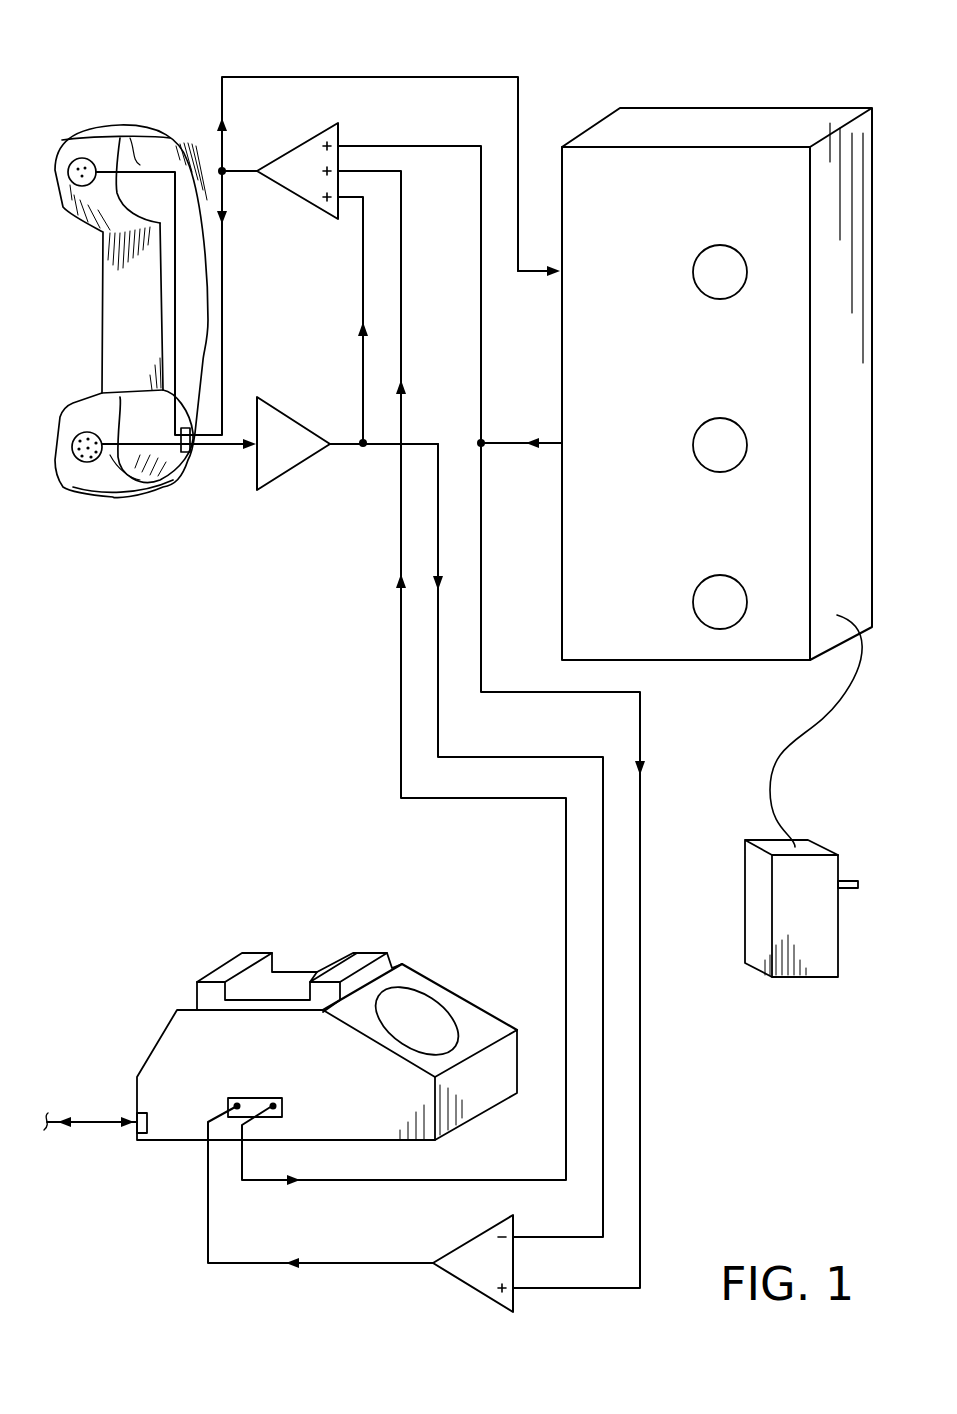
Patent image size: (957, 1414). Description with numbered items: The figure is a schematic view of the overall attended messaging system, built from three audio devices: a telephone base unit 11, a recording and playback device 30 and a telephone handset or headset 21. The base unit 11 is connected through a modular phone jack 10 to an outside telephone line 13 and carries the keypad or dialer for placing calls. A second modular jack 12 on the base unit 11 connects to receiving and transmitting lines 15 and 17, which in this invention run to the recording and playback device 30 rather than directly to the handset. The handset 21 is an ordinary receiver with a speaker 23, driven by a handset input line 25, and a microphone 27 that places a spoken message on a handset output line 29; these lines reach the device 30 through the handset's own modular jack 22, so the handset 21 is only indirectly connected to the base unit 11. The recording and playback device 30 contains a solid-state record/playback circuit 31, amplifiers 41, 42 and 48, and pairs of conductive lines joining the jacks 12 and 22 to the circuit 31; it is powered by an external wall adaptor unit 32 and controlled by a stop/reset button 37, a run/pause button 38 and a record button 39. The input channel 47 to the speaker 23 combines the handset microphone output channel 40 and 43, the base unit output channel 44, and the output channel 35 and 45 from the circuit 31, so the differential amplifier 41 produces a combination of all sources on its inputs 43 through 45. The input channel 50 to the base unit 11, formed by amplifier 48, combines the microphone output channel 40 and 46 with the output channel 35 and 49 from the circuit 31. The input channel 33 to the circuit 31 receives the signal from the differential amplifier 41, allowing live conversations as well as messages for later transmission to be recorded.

The modular phone jack 10 is at (142, 1133).
The telephone base unit 11 is at (150, 1052).
The modular jack 12 is at (250, 1098).
The outside telephone line 13 is at (90, 1124).
The receiving line 15 is at (280, 1104).
The transmitting line 17 is at (230, 1104).
The handset 21 is at (123, 318).
The modular phone jack 22 is at (186, 455).
The speaker 23 is at (70, 170).
The handset input line 25 is at (140, 148).
The microphone 27 is at (72, 445).
The handset output line 29 is at (140, 466).
The recording and playback device 30 is at (514, 48).
The solid-state record/playback circuit 31 is at (726, 110).
The wall adaptor unit 32 is at (752, 893).
The input channel 33 is at (517, 274).
The output channel 35 is at (508, 442).
The stop/reset button 37 is at (740, 292).
The run/pause button 38 is at (741, 465).
The record button 39 is at (741, 622).
The microphone output channel 40 is at (228, 448).
The differential amplifier 41 is at (297, 150).
The amplifier 42 is at (285, 410).
The microphone output channel branch 43 is at (363, 281).
The base unit output channel 44 is at (399, 514).
The recording device output channel branch 45 is at (393, 146).
The microphone output channel branch 46 is at (440, 728).
The speaker input channel 47 is at (224, 320).
The amplifier 48 is at (461, 1281).
The recording device output channel branch 49 is at (642, 727).
The base unit input channel 50 is at (340, 1266).